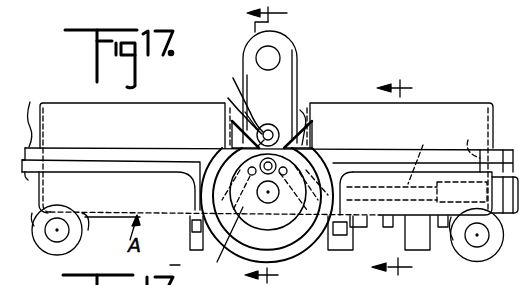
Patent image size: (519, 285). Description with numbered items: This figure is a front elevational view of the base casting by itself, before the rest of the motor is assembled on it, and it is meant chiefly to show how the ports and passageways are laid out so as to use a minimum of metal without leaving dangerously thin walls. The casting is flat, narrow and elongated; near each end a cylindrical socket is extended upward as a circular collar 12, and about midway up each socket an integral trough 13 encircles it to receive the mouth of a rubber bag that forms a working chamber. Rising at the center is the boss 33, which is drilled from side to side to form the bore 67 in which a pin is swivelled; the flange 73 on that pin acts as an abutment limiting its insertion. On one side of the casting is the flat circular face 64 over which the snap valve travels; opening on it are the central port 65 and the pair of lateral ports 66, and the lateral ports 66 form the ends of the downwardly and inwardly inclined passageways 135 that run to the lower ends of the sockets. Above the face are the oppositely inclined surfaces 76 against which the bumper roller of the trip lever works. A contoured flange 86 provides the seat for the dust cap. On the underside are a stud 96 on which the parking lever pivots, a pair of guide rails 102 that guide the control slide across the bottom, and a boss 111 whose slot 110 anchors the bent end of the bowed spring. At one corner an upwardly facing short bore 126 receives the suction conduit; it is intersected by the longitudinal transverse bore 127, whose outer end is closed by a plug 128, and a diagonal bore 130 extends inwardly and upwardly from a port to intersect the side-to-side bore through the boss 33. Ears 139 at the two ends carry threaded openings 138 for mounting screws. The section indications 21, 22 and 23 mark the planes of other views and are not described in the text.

The circular collar 12 is at (84, 103).
The trough 13 is at (38, 112).
The section line 21 is at (279, 146).
The center shaft hole 22 is at (270, 200).
The section line 23 is at (404, 179).
The boss 33 is at (298, 68).
The flat circular face 64 is at (223, 244).
The central port 65 is at (269, 122).
The lateral ports 66 is at (249, 169).
The bore 67 is at (236, 108).
The flange 73 is at (238, 95).
The oppositely inclined surfaces 76 is at (231, 119).
The flange 86 is at (265, 179).
The stud 96 is at (337, 246).
The guide rails 102 is at (388, 227).
The slot 110 is at (190, 242).
The boss 111 is at (185, 261).
The short bore 126 is at (471, 139).
The transverse bore 127 is at (428, 154).
The plug 128 is at (347, 193).
The diagonal bore 130 is at (267, 205).
The passageways 135 is at (233, 181).
The threaded openings 138 is at (38, 250).
The ears 139 is at (68, 245).